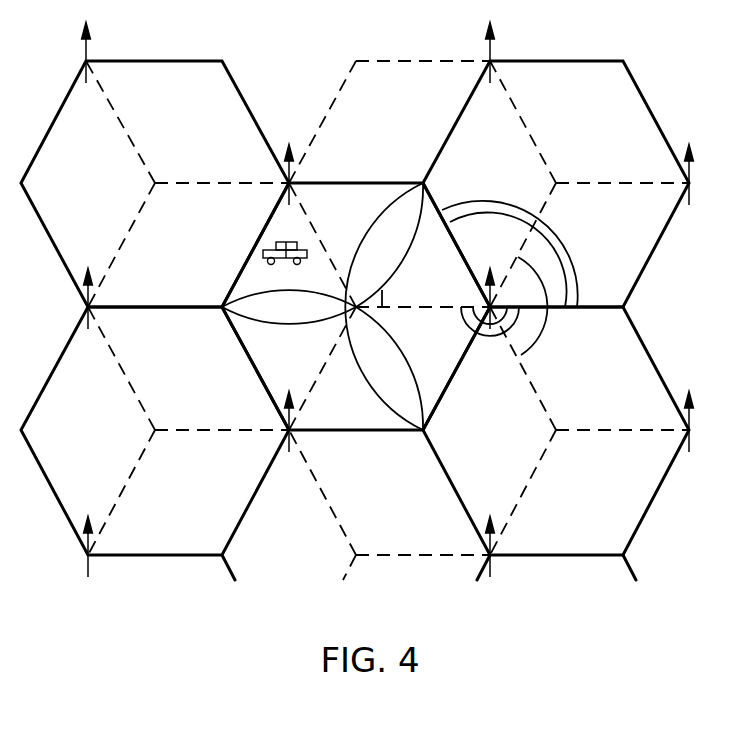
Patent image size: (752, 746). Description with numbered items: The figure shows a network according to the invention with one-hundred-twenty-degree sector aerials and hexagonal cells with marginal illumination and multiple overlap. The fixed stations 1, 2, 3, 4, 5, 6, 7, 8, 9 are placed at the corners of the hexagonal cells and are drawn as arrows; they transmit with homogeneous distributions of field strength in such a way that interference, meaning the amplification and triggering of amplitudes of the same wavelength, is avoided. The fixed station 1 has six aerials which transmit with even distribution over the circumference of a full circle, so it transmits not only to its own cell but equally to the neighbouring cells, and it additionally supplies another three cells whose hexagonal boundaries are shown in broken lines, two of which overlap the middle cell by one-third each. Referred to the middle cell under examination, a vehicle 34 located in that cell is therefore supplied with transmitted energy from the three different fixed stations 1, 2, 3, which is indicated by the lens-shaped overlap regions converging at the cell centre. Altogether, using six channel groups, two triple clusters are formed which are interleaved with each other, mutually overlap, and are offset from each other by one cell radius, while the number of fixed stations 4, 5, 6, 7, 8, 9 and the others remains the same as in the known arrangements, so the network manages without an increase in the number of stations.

The fixed station 1 is at (287, 409).
The fixed station 2 is at (286, 162).
The fixed station 3 is at (488, 286).
The fixed station 4 is at (85, 286).
The fixed station 5 is at (83, 41).
The fixed station 6 is at (487, 41).
The fixed station 7 is at (688, 162).
The fixed station 8 is at (687, 409).
The fixed station 9 is at (487, 534).
The vehicle 34 is at (298, 243).